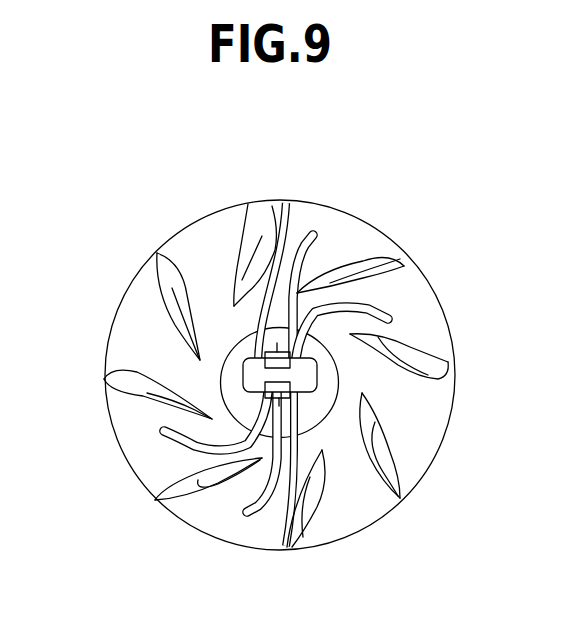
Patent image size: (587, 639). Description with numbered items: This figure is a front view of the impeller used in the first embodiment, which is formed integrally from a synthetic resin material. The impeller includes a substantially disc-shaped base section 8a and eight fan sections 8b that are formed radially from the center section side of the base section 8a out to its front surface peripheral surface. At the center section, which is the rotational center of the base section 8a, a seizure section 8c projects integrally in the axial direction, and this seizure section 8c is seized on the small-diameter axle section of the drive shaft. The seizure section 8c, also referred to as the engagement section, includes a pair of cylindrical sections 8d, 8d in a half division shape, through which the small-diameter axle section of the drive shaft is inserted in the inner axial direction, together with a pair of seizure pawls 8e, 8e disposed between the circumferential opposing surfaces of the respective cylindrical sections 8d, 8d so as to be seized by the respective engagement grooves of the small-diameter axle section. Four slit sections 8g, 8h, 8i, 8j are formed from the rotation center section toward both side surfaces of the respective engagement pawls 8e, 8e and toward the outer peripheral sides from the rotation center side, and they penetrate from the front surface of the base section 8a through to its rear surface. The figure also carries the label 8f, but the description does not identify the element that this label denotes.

The base section 8a is at (437, 397).
The fan sections 8b is at (262, 235).
The seizure section 8c is at (233, 335).
The cylindrical sections 8d is at (222, 372).
The seizure pawls 8e is at (306, 268).
The vertical rib 8f is at (328, 398).
The slit section 8g is at (311, 225).
The slit section 8h is at (156, 431).
The slit section 8i is at (250, 523).
The slit section 8j is at (398, 316).